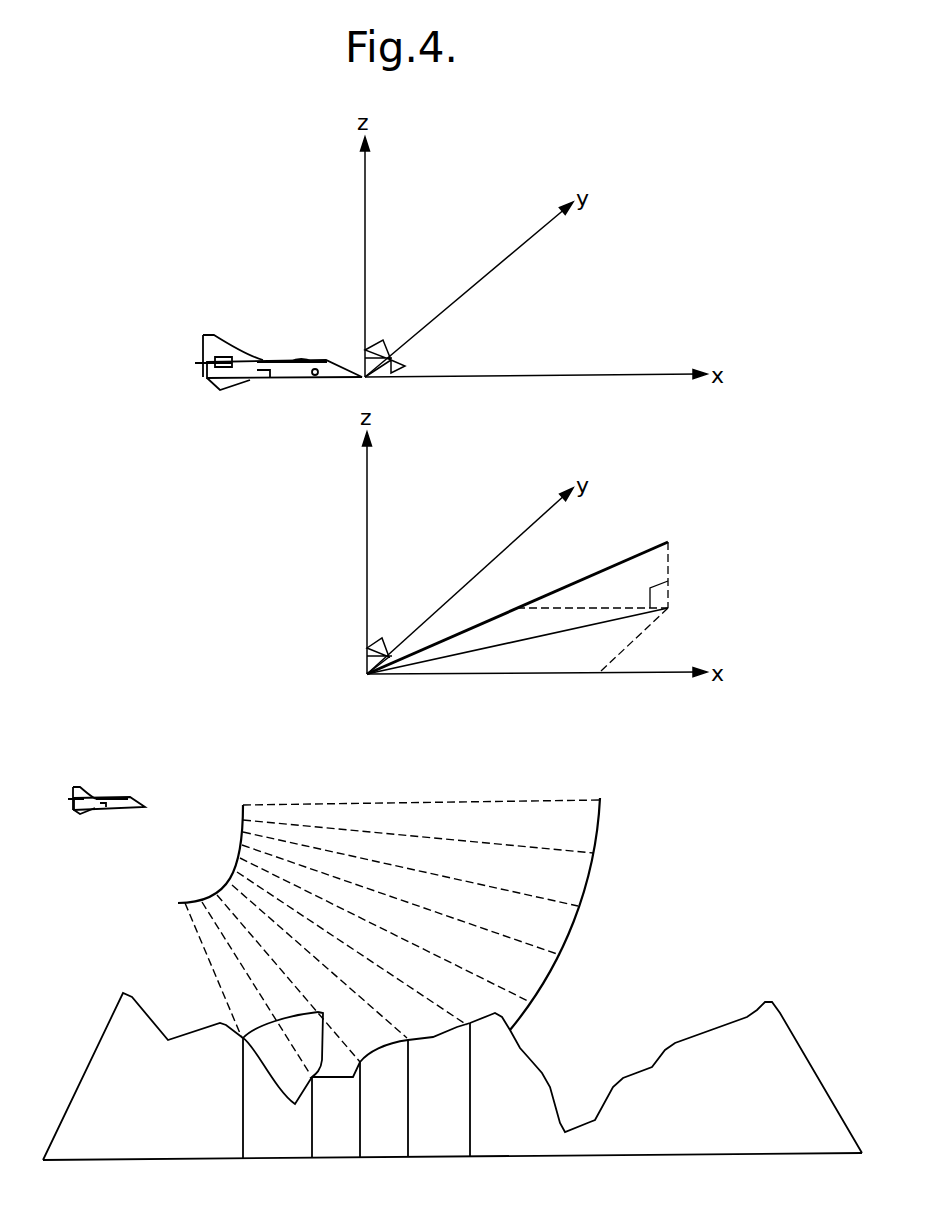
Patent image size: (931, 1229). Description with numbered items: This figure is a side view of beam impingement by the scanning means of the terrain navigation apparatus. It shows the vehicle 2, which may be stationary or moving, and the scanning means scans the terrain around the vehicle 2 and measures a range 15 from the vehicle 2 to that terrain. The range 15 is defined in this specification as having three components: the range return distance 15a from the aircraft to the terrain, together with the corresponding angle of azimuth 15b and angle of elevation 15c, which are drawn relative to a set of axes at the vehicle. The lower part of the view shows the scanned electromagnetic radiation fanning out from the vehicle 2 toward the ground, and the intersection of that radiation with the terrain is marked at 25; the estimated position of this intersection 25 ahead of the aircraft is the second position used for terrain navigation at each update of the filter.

The vehicle 2 is at (305, 363).
The range 15 is at (336, 556).
The range return distance 15a is at (638, 553).
The angle of azimuth 15b is at (534, 650).
The angle of elevation 15c is at (547, 585).
The intersection of the electromagnetic radiation and the terrain 25 is at (360, 1060).